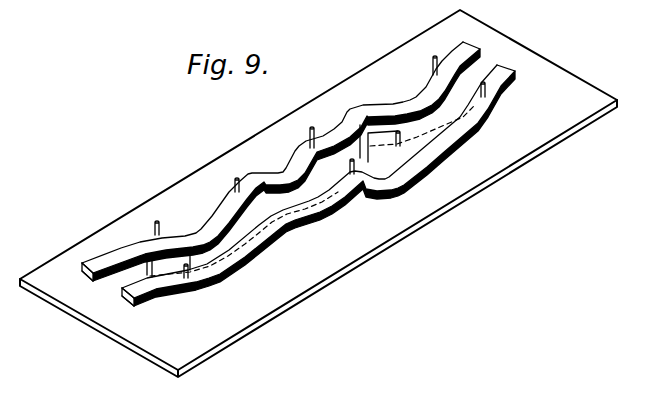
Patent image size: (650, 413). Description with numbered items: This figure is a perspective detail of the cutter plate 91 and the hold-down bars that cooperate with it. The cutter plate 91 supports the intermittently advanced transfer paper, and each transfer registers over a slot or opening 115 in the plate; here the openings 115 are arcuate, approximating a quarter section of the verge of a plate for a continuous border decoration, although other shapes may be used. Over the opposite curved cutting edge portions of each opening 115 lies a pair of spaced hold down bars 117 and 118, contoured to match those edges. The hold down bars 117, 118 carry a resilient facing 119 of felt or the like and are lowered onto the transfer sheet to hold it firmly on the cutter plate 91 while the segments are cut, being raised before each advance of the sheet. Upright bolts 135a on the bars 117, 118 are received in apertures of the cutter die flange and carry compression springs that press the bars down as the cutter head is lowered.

The cutter plate 91 is at (555, 93).
The slot or opening 115 is at (218, 257).
The hold down bar 117 is at (423, 88).
The hold down bar 118 is at (477, 108).
The resilient facing 119 is at (82, 271).
The upright bolts 135a is at (173, 260).